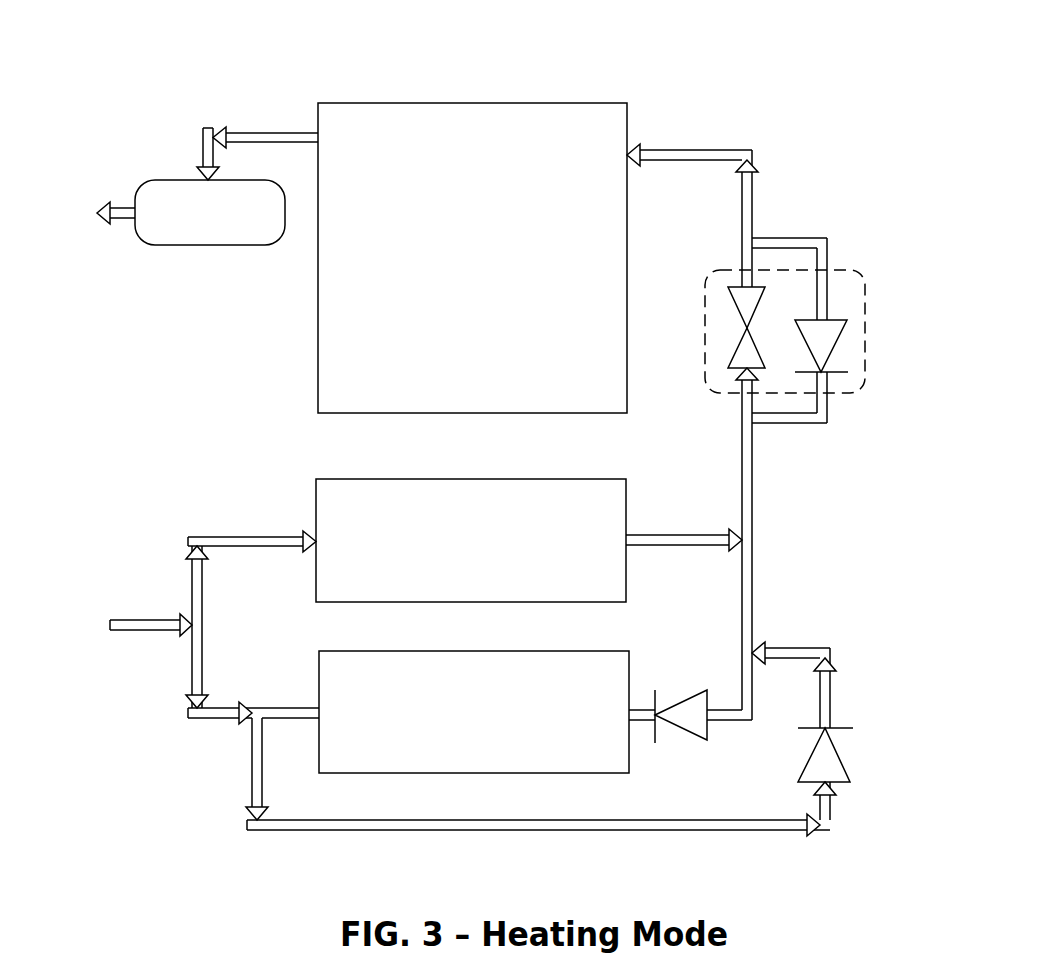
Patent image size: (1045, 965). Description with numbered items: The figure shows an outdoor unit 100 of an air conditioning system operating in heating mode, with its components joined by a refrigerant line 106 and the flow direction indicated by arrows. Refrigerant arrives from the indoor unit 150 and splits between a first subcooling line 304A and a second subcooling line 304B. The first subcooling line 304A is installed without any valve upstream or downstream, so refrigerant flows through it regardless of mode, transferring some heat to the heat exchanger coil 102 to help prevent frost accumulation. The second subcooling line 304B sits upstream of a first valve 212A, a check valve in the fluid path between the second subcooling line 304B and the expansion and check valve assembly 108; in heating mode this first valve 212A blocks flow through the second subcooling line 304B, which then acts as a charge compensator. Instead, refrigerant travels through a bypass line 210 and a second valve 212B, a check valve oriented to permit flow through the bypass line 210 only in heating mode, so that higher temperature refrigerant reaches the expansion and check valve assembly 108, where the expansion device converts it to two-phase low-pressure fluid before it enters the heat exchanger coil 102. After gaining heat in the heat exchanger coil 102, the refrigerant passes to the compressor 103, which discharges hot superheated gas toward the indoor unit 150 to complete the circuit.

The outdoor unit 100 is at (266, 70).
The heat exchanger coil 102 is at (472, 258).
The compressor 103 is at (210, 212).
The refrigerant line 106 is at (718, 149).
The expansion and check valve assembly 108 is at (867, 304).
The indoor unit 150 is at (110, 419).
The bypass line 210 is at (673, 817).
The first valve 212A is at (686, 693).
The second valve 212B is at (843, 755).
The first subcooling line 304A is at (471, 540).
The second subcooling line 304B is at (474, 712).